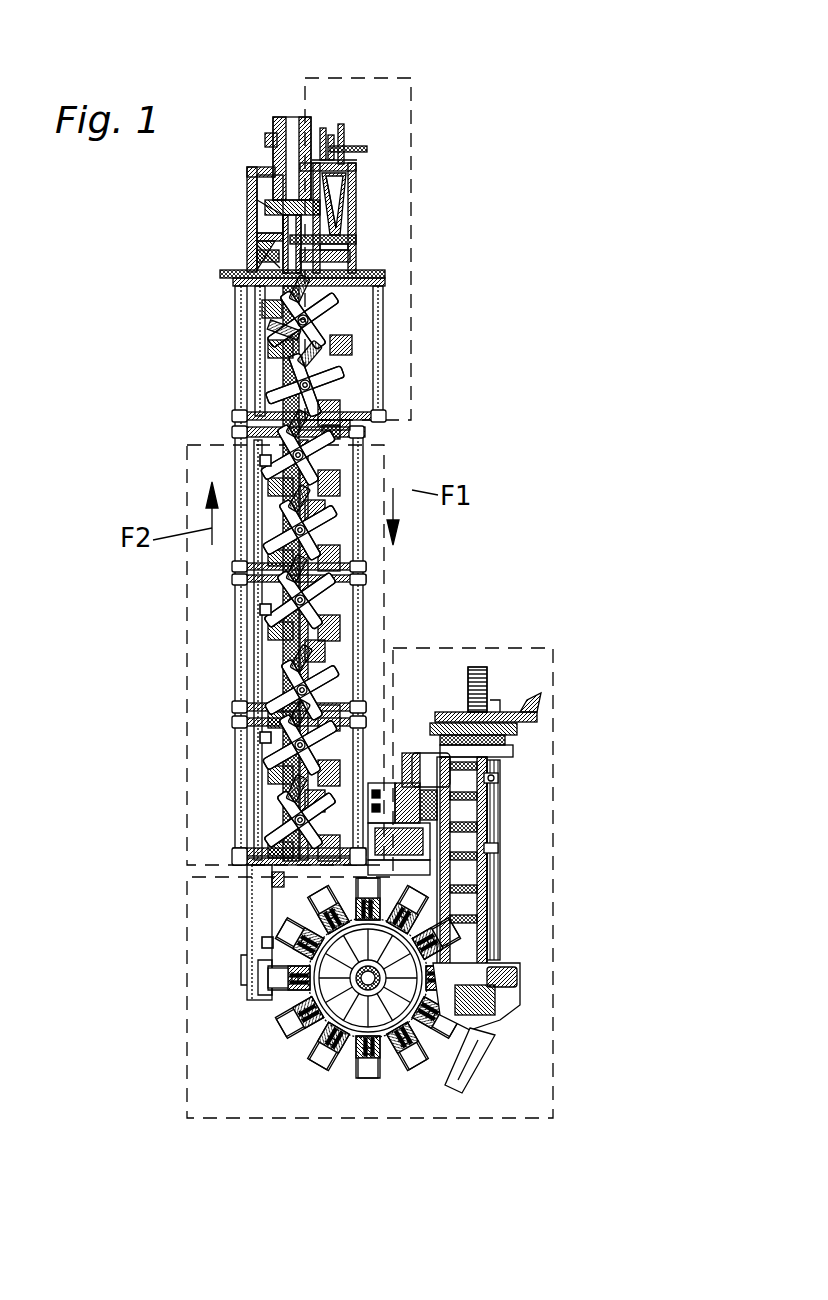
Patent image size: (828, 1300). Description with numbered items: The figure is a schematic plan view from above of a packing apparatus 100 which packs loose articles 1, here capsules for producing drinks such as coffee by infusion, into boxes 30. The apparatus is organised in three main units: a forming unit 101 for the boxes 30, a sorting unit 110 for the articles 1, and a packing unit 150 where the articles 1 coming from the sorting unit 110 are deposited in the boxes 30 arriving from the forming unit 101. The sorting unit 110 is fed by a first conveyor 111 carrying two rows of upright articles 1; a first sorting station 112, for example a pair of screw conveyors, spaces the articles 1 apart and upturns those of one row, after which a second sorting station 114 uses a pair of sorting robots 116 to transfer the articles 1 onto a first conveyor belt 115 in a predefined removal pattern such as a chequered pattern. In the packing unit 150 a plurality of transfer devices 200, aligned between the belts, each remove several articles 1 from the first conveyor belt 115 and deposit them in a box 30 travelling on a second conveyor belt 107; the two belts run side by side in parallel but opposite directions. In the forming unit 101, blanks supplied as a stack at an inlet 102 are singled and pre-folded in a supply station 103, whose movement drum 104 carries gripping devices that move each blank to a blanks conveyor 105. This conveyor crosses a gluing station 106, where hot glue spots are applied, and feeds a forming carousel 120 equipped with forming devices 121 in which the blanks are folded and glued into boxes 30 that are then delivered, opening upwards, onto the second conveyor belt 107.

The article 1 is at (330, 138).
The packing apparatus 100 is at (570, 418).
The sorting unit 110 is at (430, 190).
The first conveyor 111 is at (335, 137).
The first sorting station 112 is at (335, 208).
The second sorting station 114 is at (302, 323).
The first conveyor belt 115 is at (310, 435).
The sorting robot 116 is at (327, 317).
The packing unit 150 is at (396, 593).
The transfer device 200 is at (288, 455).
The box 30 is at (260, 461).
The forming unit 101 is at (565, 896).
The inlet 102 is at (488, 683).
The supply station 103 is at (500, 746).
The movement drum 104 is at (498, 778).
The blanks conveyor 105 is at (490, 848).
The gluing station 106 is at (490, 1002).
The second conveyor belt 107 is at (258, 882).
The forming carousel 120 is at (330, 1012).
The forming device 121 is at (322, 1063).